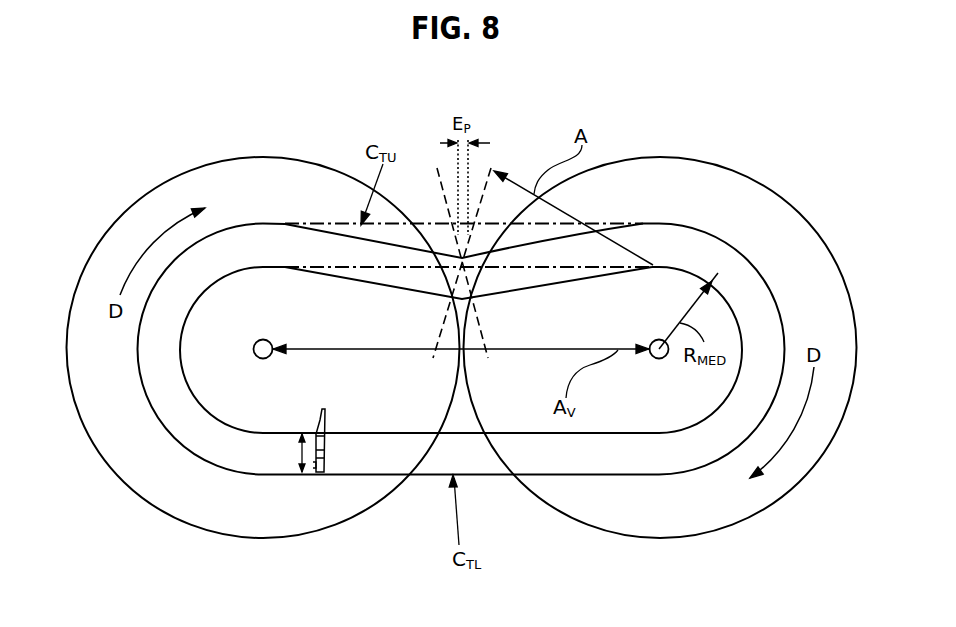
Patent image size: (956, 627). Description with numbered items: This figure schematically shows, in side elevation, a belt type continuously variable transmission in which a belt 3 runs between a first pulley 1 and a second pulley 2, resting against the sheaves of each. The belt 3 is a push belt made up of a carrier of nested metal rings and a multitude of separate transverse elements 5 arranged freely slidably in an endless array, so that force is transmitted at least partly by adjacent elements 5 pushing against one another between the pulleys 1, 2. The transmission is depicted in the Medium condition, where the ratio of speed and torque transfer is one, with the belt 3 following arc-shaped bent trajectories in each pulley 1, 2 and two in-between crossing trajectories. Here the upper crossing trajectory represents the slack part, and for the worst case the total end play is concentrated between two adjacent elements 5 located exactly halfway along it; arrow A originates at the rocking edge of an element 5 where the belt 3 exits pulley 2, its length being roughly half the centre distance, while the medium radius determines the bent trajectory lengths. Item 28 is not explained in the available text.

The pulley 1 is at (126, 238).
The pulley 2 is at (766, 216).
The belt 3 is at (690, 455).
The transverse element 5 is at (318, 472).
The crossing lines 28 is at (523, 267).